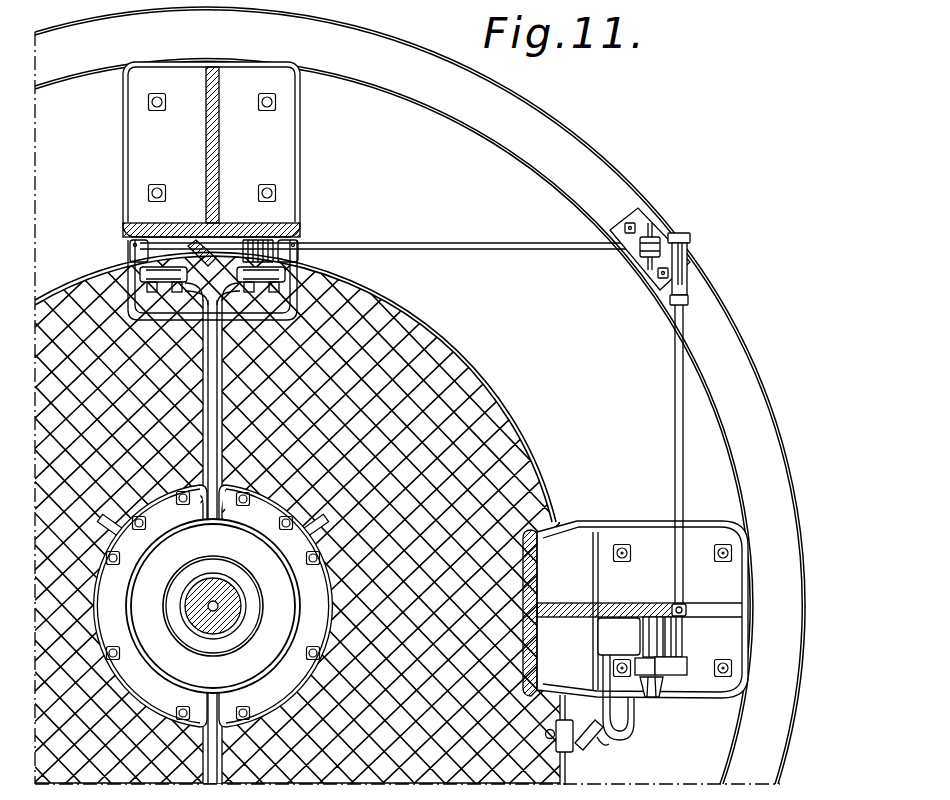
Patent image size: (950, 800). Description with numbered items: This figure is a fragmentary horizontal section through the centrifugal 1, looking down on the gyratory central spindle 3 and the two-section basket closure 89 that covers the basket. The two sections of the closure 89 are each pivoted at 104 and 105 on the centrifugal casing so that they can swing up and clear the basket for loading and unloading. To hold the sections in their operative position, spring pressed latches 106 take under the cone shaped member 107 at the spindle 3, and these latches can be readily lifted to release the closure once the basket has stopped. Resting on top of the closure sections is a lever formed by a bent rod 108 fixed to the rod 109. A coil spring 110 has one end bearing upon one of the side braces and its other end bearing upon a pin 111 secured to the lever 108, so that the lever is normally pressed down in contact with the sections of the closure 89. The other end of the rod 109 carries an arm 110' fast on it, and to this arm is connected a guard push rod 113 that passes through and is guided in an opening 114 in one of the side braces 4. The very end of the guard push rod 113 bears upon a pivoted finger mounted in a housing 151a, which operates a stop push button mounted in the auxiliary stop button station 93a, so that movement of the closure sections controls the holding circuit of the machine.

The centrifugal 1 is at (420, 395).
The gyratory central spindle 3 is at (211, 632).
The side frame 4 is at (205, 152).
The basket closure 89 is at (462, 362).
The pivot 104 is at (140, 258).
The pivot 105 is at (590, 742).
The spring pressed latch 106 is at (140, 570).
The cone shaped member 107 is at (256, 653).
The bent rod 108 is at (300, 300).
The rod 109 is at (505, 250).
The coil spring 110 is at (251, 234).
The arm 110' is at (671, 256).
The pin 111 is at (300, 262).
The guard push rod 113 is at (676, 439).
The opening 114 is at (686, 611).
The auxiliary stop button station 93a is at (640, 637).
The housing 151a is at (675, 672).